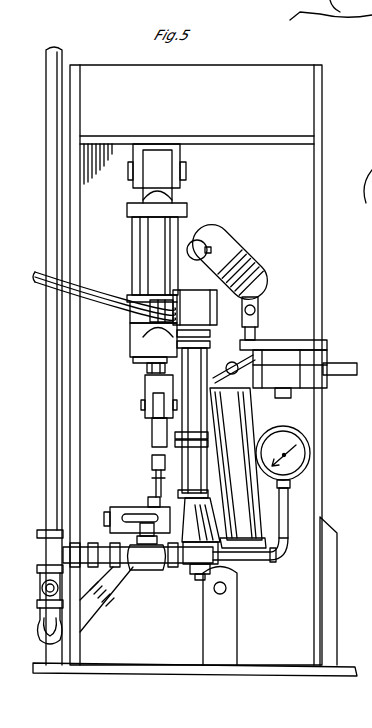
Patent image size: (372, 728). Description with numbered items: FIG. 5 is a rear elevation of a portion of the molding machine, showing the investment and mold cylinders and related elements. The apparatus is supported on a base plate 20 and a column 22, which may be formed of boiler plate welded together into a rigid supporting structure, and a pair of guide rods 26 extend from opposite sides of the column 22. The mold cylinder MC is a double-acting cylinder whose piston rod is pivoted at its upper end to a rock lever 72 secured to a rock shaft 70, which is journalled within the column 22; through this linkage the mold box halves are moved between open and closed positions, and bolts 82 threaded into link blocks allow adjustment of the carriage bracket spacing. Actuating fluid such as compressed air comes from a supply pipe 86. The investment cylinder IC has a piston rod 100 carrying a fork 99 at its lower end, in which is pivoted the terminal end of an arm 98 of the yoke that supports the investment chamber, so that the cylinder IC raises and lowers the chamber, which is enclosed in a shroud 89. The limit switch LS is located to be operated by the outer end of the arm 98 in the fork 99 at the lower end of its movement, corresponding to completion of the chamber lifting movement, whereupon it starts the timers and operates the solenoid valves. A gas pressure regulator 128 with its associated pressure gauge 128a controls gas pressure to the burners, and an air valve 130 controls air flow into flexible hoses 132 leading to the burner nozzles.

The base plate 20 is at (172, 672).
The column 22 is at (308, 240).
The guide rods 26 is at (371, 198).
The rock shaft 70 is at (202, 240).
The rock lever 72 is at (224, 249).
The bolts 82 is at (371, 72).
The supply pipe 86 is at (60, 50).
The shroud 89 is at (325, 563).
The arm 98 is at (152, 427).
The fork 99 is at (147, 384).
The piston rod 100 is at (145, 370).
The gas pressure regulator 128 is at (325, 383).
The pressure gauge 128a is at (303, 455).
The air valve 130 is at (145, 562).
The flexible hoses 132 is at (97, 307).
The investment cylinder IC is at (150, 251).
The mold cylinder MC is at (245, 421).
The limit switch LS is at (127, 498).